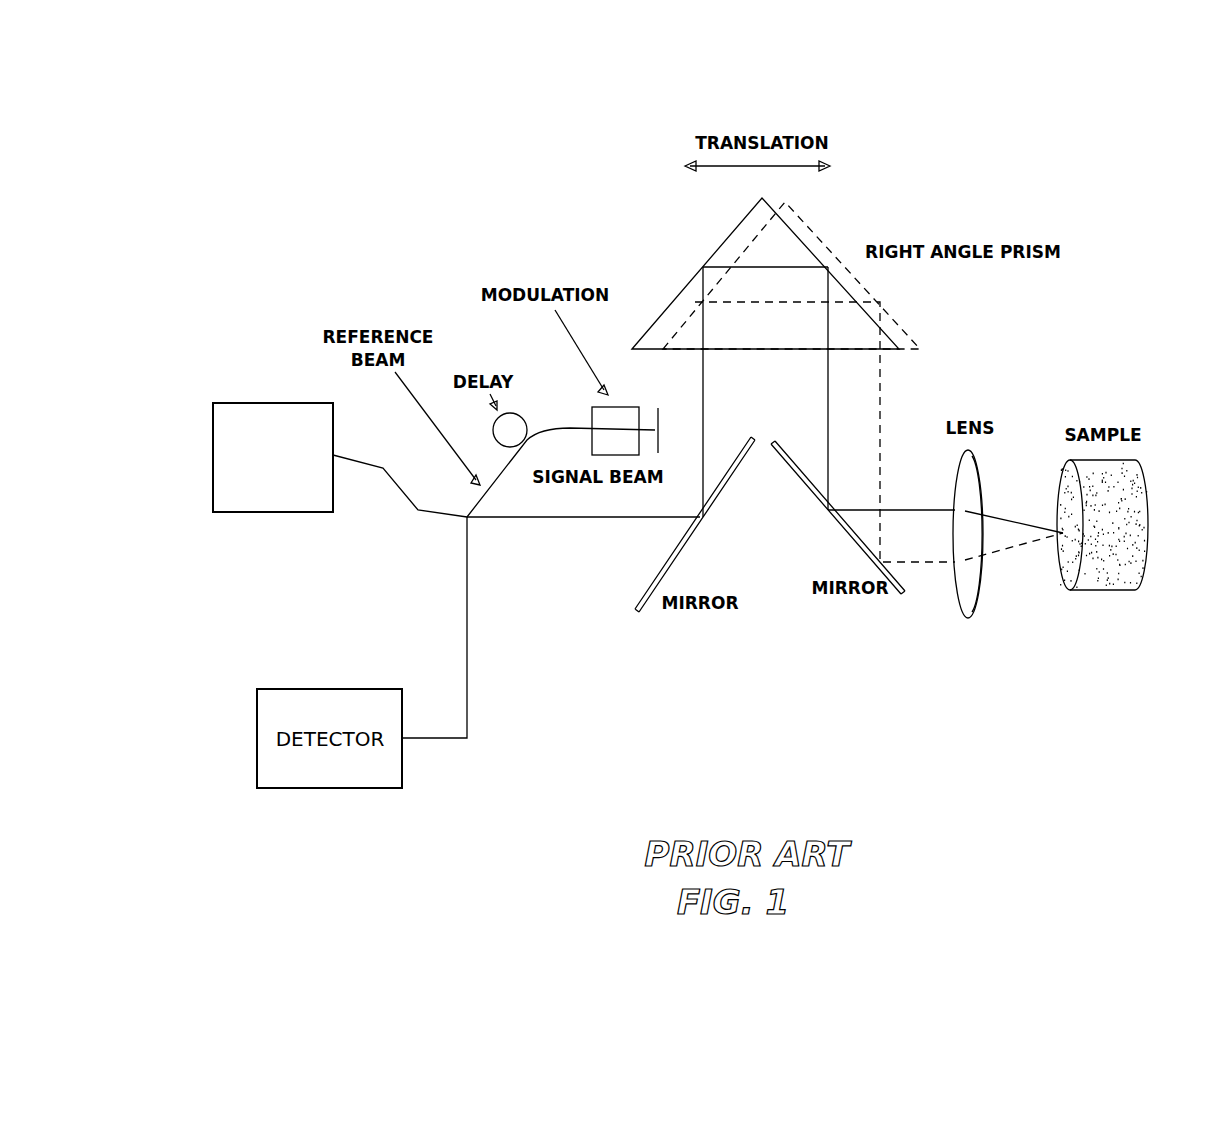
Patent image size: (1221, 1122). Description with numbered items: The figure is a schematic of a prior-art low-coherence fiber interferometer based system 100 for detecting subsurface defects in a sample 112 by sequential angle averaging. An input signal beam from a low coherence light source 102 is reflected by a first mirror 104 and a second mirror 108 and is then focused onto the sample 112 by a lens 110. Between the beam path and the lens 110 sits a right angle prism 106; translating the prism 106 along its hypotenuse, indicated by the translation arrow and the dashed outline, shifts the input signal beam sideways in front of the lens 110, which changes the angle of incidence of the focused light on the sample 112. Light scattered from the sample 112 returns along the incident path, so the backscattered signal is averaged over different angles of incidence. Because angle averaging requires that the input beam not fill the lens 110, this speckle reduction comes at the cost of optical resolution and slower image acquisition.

The low-coherence fiber interferometer based system 100 is at (1128, 193).
The low coherence light source 102 is at (253, 403).
The mirror 104 is at (665, 560).
The right angle prism 106 is at (678, 293).
The mirror 108 is at (893, 597).
The lens 110 is at (958, 596).
The sample 112 is at (1128, 592).